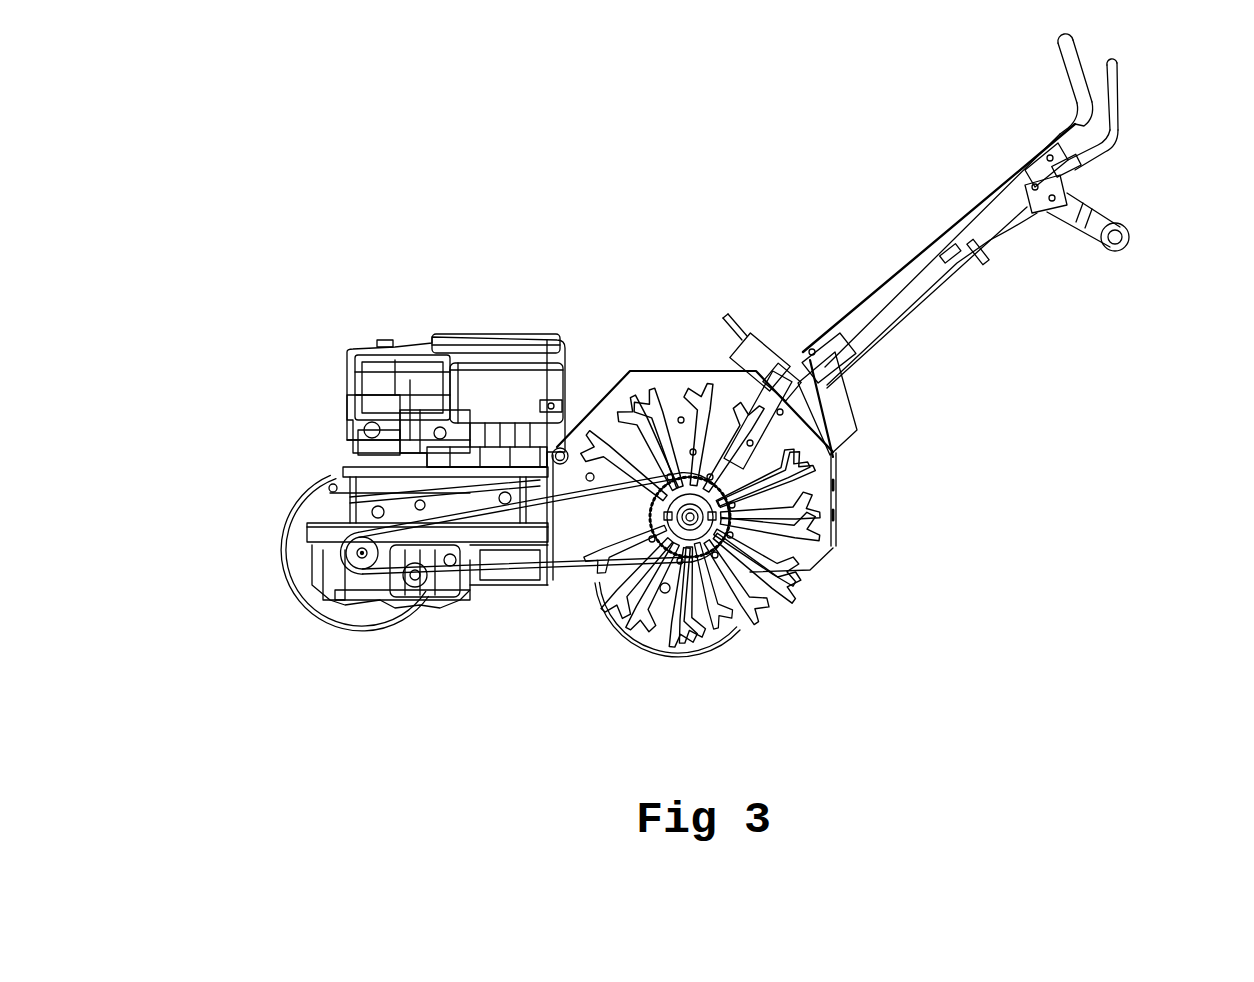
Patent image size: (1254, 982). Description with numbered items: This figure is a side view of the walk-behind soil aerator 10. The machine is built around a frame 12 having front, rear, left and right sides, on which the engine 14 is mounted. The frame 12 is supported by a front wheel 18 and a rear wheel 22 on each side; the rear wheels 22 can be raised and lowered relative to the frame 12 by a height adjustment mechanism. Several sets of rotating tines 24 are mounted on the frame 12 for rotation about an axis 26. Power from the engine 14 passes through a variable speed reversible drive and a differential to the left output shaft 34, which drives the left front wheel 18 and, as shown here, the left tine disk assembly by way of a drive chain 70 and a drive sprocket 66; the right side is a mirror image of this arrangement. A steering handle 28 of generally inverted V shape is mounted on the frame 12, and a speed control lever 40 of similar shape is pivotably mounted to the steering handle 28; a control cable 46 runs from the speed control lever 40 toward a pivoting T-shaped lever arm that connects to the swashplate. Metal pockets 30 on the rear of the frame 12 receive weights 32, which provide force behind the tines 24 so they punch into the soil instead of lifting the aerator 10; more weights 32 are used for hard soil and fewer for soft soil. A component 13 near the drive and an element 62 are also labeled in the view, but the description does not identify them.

The walk-behind soil aerator 10 is at (666, 205).
The frame 12 is at (628, 368).
The transmission 13 is at (453, 593).
The engine 14 is at (490, 385).
The front wheel 18 is at (328, 610).
The rear wheel 22 is at (710, 620).
The rotating tines 24 is at (804, 645).
The axis 26 is at (797, 543).
The steering handle 28 is at (1073, 73).
The metal pocket 30 is at (832, 428).
The weight 32 is at (755, 343).
The left output shaft 34 is at (350, 556).
The speed control lever 40 is at (1115, 97).
The control cable 46 is at (897, 307).
The gearbox 62 is at (377, 597).
The drive sprocket 66 is at (678, 537).
The drive chain 70 is at (520, 558).